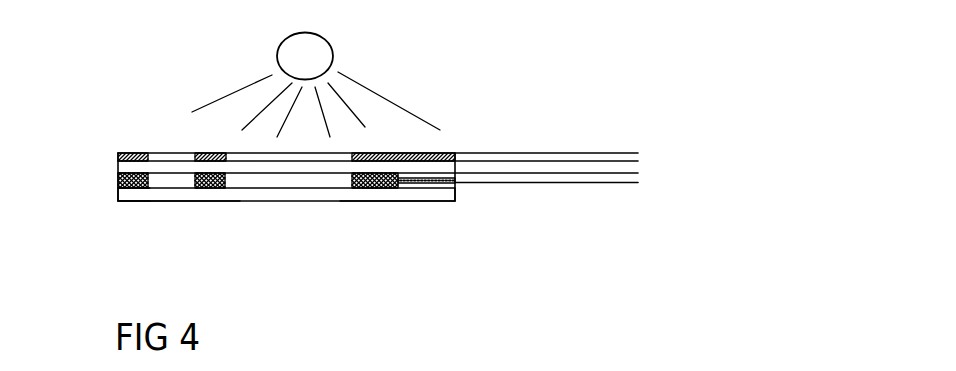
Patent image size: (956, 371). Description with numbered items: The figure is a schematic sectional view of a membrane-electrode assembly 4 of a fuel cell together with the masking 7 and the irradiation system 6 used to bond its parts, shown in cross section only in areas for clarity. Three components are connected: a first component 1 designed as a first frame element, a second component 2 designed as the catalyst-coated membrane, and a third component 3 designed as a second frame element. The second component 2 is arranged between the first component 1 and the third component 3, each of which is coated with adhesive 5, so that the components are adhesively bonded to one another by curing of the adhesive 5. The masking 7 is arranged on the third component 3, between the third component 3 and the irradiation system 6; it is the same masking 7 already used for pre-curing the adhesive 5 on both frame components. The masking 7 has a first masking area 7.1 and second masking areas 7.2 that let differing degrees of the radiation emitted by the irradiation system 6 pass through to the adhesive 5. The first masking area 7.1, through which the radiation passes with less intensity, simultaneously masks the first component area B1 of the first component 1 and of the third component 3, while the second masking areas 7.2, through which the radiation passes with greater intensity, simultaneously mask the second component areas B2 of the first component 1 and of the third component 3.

The first component 1 is at (443, 196).
The second component 2 is at (583, 183).
The third component 3 is at (127, 167).
The membrane-electrode assembly 4 is at (129, 209).
The adhesive 5 is at (205, 190).
The irradiation system 6 is at (312, 45).
The masking 7 is at (583, 161).
The first masking area 7.1 is at (417, 151).
The second masking areas 7.2 is at (207, 153).
The first component area B1 is at (410, 217).
The second component areas B2 is at (209, 216).